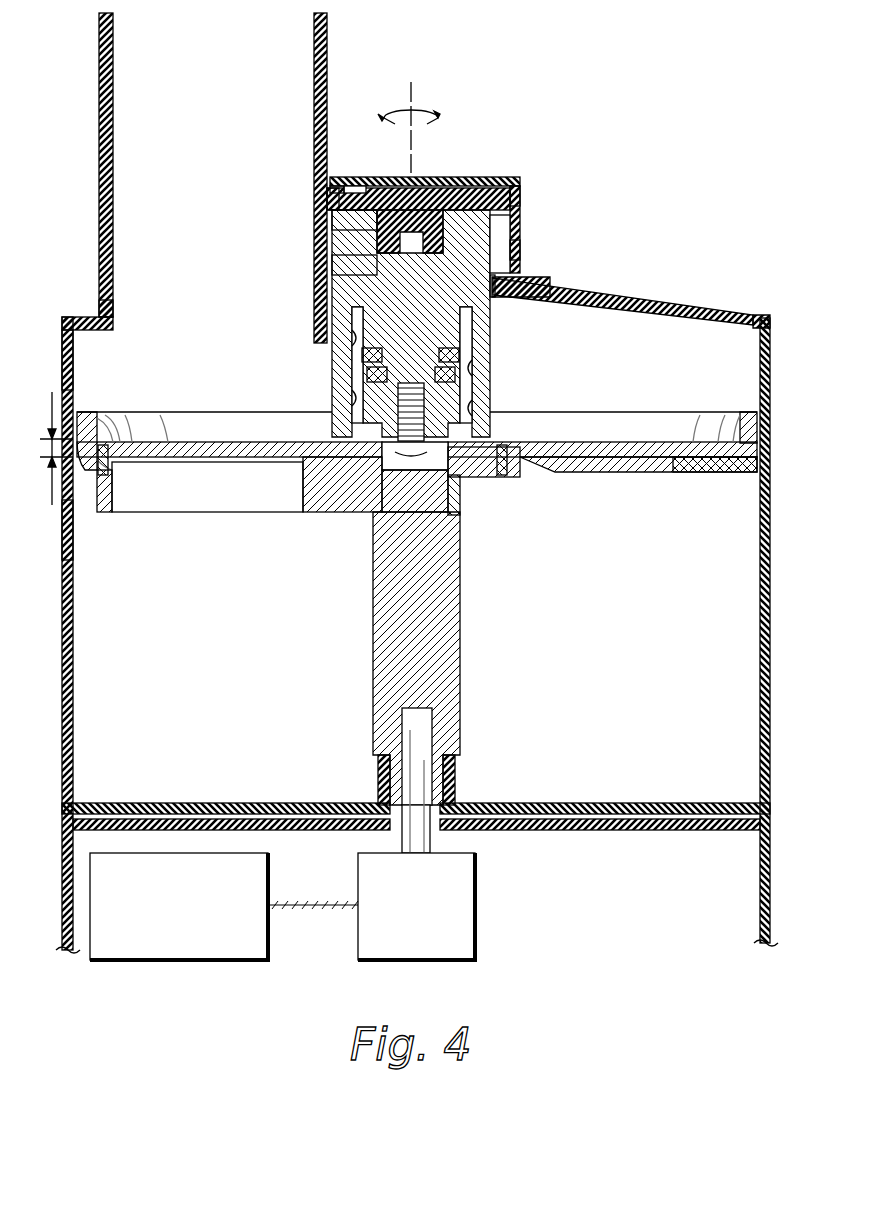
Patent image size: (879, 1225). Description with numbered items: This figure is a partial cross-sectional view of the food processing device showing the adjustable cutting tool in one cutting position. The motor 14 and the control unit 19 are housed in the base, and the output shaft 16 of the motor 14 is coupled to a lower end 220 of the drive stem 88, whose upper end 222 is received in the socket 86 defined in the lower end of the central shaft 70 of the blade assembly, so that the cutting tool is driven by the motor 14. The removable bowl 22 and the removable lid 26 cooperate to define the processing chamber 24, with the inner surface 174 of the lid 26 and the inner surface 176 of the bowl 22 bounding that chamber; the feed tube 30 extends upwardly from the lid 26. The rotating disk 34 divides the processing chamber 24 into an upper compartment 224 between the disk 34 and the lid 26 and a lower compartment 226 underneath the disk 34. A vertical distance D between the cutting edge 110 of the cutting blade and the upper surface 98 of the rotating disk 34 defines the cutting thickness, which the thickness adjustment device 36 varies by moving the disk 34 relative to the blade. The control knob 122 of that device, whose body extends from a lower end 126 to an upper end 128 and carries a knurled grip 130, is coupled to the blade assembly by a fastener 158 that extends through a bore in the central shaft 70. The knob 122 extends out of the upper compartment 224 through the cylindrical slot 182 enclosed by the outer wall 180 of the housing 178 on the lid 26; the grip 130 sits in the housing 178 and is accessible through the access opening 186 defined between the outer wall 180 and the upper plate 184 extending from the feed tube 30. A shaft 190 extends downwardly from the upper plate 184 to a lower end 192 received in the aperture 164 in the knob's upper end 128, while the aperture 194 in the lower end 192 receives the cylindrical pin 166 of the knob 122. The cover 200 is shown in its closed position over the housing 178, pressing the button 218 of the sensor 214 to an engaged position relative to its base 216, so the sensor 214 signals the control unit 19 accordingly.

The motor 14 is at (462, 905).
The output shaft 16 is at (455, 777).
The control unit 19 is at (185, 962).
The removable bowl 22 is at (74, 528).
The processing chamber 24 is at (95, 632).
The removable lid 26 is at (83, 316).
The feed tube 30 is at (327, 52).
The rotating disk 34 is at (195, 412).
The thickness adjustment device 36 is at (540, 385).
The central shaft 70 is at (460, 498).
The socket 86 is at (432, 520).
The drive stem 88 is at (447, 643).
The upper surface 98 is at (100, 432).
The cutting edge 110 is at (200, 487).
The control knob 122 is at (335, 300).
The lower end 126 is at (700, 473).
The upper end 128 is at (370, 240).
The knurled grip 130 is at (505, 232).
The fastener 158 is at (400, 465).
The aperture 164 is at (335, 212).
The cylindrical pin 166 is at (330, 265).
The inner surface 174 is at (100, 321).
The inner surface 176 is at (74, 368).
The housing 178 is at (352, 184).
The outer wall 180 is at (540, 285).
The cylindrical slot 182 is at (495, 300).
The upper plate 184 is at (505, 180).
The access opening 186 is at (522, 250).
The shaft 190 is at (475, 180).
The lower end 192 is at (522, 189).
The aperture 194 is at (432, 176).
The cover 200 is at (520, 180).
The sensor 214 is at (300, 170).
The base 216 is at (325, 195).
The button 218 is at (365, 188).
The lower end 220 is at (455, 745).
The upper end 222 is at (460, 513).
The upper compartment 224 is at (650, 345).
The lower compartment 226 is at (742, 562).
The vertical distance D is at (52, 392).